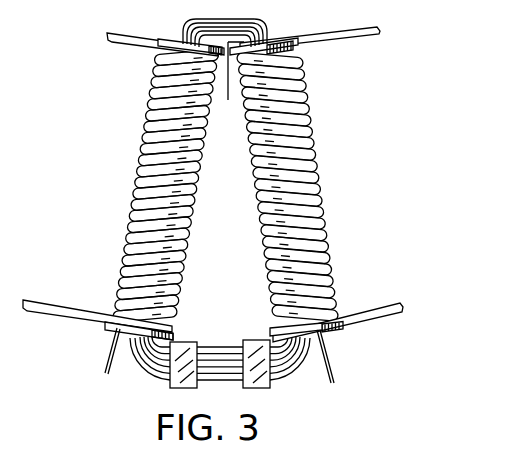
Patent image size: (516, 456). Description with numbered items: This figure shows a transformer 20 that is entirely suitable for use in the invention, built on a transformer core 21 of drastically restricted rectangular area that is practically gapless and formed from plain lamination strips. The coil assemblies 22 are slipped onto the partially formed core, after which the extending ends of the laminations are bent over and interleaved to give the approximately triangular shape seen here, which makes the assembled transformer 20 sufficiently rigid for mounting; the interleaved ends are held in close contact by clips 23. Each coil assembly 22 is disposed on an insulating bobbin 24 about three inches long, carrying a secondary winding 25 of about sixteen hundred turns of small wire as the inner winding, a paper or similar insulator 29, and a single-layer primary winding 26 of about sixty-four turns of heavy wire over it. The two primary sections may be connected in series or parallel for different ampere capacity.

The transformer 20 is at (282, 259).
The transformer core 21 is at (198, 24).
The coil assemblies 22 is at (329, 162).
The clips 23 is at (266, 388).
The insulating bobbins 24 is at (344, 329).
The secondary winding 25 is at (250, 100).
The primary winding 26 is at (331, 256).
The insulator 29 is at (271, 327).